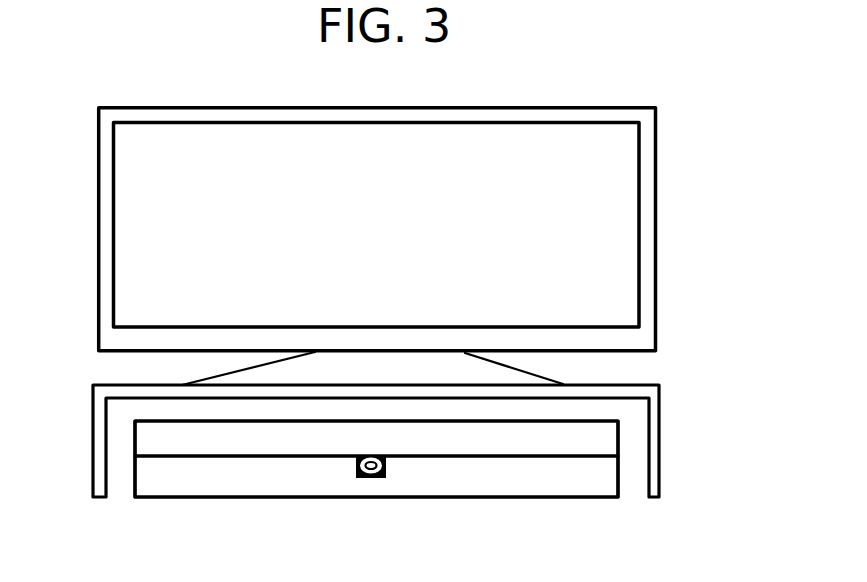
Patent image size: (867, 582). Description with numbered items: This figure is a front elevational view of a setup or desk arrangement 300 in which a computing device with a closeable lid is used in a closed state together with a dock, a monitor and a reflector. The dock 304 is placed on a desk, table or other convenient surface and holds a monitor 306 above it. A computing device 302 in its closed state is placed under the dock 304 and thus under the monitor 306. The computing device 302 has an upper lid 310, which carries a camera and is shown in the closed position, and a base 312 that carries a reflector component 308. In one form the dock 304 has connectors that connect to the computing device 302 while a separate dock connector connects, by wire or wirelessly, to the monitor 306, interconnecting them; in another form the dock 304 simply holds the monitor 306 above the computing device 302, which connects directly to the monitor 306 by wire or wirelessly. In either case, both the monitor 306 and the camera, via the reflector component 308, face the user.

The desk arrangement 300 is at (236, 91).
The computing device 302 is at (505, 485).
The dock 304 is at (662, 418).
The monitor 306 is at (622, 236).
The reflector component 308 is at (371, 478).
The upper lid 310 is at (153, 448).
The base 312 is at (172, 485).